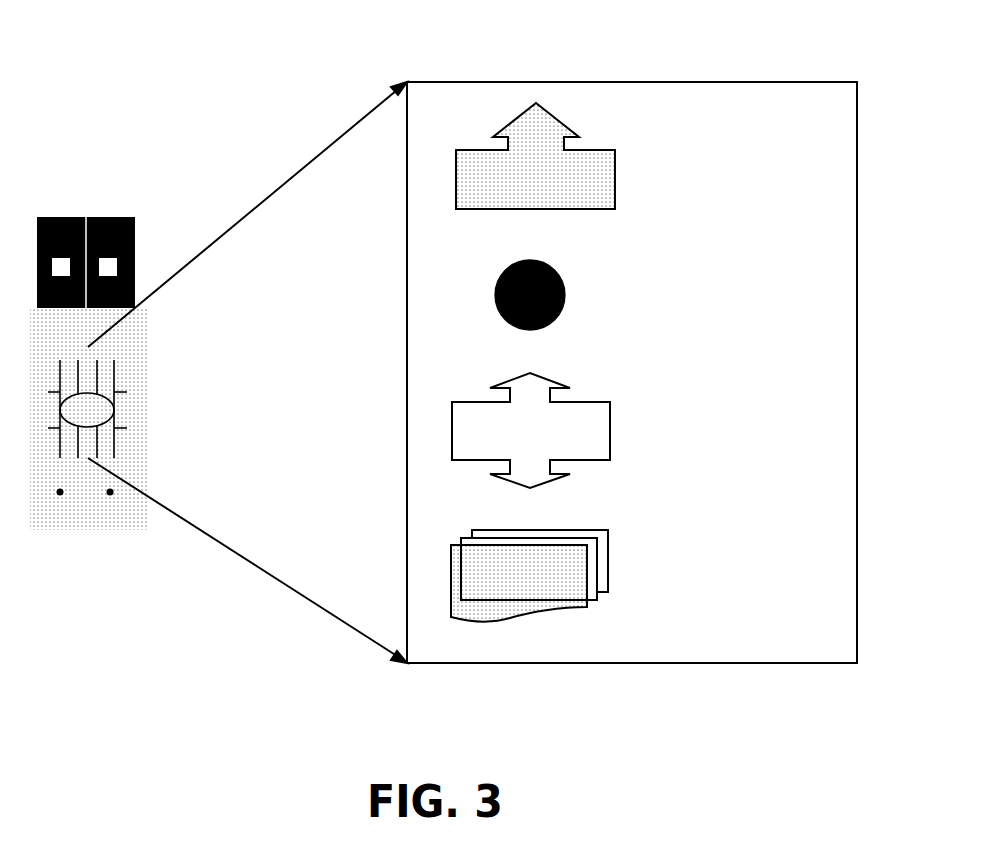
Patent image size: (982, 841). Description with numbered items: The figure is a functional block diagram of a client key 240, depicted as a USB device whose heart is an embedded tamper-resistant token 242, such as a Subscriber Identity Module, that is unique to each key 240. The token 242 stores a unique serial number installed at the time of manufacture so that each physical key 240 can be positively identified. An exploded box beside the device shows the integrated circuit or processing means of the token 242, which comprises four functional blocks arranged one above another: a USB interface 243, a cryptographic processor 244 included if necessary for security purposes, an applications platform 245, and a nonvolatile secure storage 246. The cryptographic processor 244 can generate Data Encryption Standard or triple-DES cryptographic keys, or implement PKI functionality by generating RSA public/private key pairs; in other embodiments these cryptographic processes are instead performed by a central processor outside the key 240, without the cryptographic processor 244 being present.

The client key 240 is at (235, 77).
The embedded tamper-resistant token 242 is at (113, 430).
The USB interface 243 is at (615, 150).
The cryptographic processor 244 is at (561, 272).
The applications platform 245 is at (587, 400).
The nonvolatile secure storage 246 is at (609, 530).